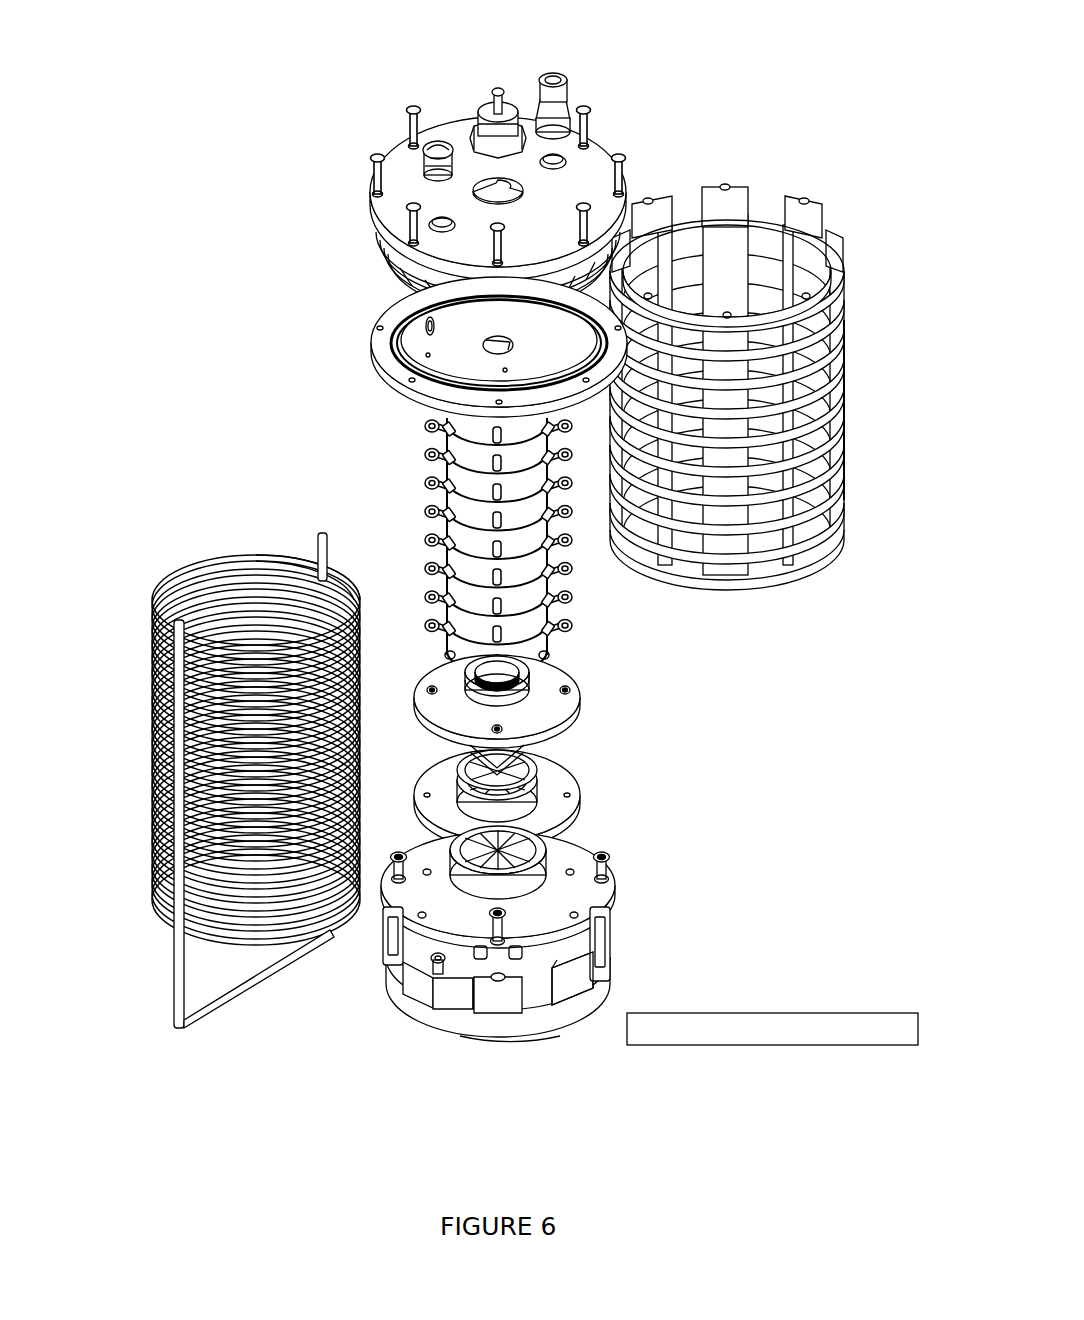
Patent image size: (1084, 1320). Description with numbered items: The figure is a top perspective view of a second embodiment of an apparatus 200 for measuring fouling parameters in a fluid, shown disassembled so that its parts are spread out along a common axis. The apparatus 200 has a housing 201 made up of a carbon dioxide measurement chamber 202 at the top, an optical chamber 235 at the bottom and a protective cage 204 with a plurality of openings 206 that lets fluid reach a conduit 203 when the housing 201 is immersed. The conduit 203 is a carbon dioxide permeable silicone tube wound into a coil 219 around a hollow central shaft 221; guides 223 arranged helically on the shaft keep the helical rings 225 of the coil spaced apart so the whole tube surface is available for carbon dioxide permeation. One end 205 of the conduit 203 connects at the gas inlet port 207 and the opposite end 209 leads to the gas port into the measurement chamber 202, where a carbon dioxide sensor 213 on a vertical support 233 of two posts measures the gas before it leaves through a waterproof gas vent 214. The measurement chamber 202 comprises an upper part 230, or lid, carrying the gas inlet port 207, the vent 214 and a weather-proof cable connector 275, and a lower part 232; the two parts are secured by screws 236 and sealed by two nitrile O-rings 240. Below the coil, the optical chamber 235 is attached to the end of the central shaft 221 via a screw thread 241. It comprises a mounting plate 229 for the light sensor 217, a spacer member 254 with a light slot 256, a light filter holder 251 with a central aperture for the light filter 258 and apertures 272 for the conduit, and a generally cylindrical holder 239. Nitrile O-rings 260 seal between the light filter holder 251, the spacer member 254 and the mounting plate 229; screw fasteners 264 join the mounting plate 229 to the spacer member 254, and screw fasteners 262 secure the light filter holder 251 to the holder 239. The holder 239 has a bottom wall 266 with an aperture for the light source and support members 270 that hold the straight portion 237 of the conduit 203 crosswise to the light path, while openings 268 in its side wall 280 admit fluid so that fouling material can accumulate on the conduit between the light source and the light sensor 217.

The apparatus 200 is at (240, 100).
The housing 201 is at (630, 125).
The carbon dioxide measurement chamber 202 is at (240, 216).
The conduit 203 is at (190, 572).
The protective cage 204 is at (808, 202).
The end of the conduit 205 is at (323, 530).
The openings 206 is at (845, 472).
The gas inlet port 207 is at (558, 82).
The opposite end of the conduit 209 is at (170, 616).
The carbon dioxide sensor 213 is at (426, 322).
The gas vent 214 is at (438, 142).
The light sensor 217 is at (470, 758).
The coil 219 is at (147, 690).
The central shaft 221 is at (447, 562).
The guides 223 is at (428, 482).
The helical rings 225 is at (163, 793).
The mounting plate 229 is at (533, 705).
The first part 230 is at (370, 208).
The second part 232 is at (370, 306).
The vertical support 233 is at (498, 350).
The optical chamber 235 is at (690, 830).
The screws 236 is at (407, 110).
The straight portion of the conduit 237 is at (236, 988).
The holder 239 is at (548, 1012).
The O-rings 240 is at (440, 300).
The screw thread 241 is at (528, 685).
The light filter holder 251 is at (432, 832).
The spacer member 254 is at (440, 800).
The light slot 256 is at (540, 780).
The light filter 258 is at (546, 868).
The O-rings 260 is at (537, 790).
The screw fasteners 262 is at (436, 964).
The screw fasteners 264 is at (494, 727).
The bottom wall 266 is at (456, 1012).
The openings 268 is at (548, 990).
The support members 270 is at (454, 992).
The apertures 272 is at (490, 916).
The cable connector 275 is at (501, 96).
The side wall 280 is at (612, 928).